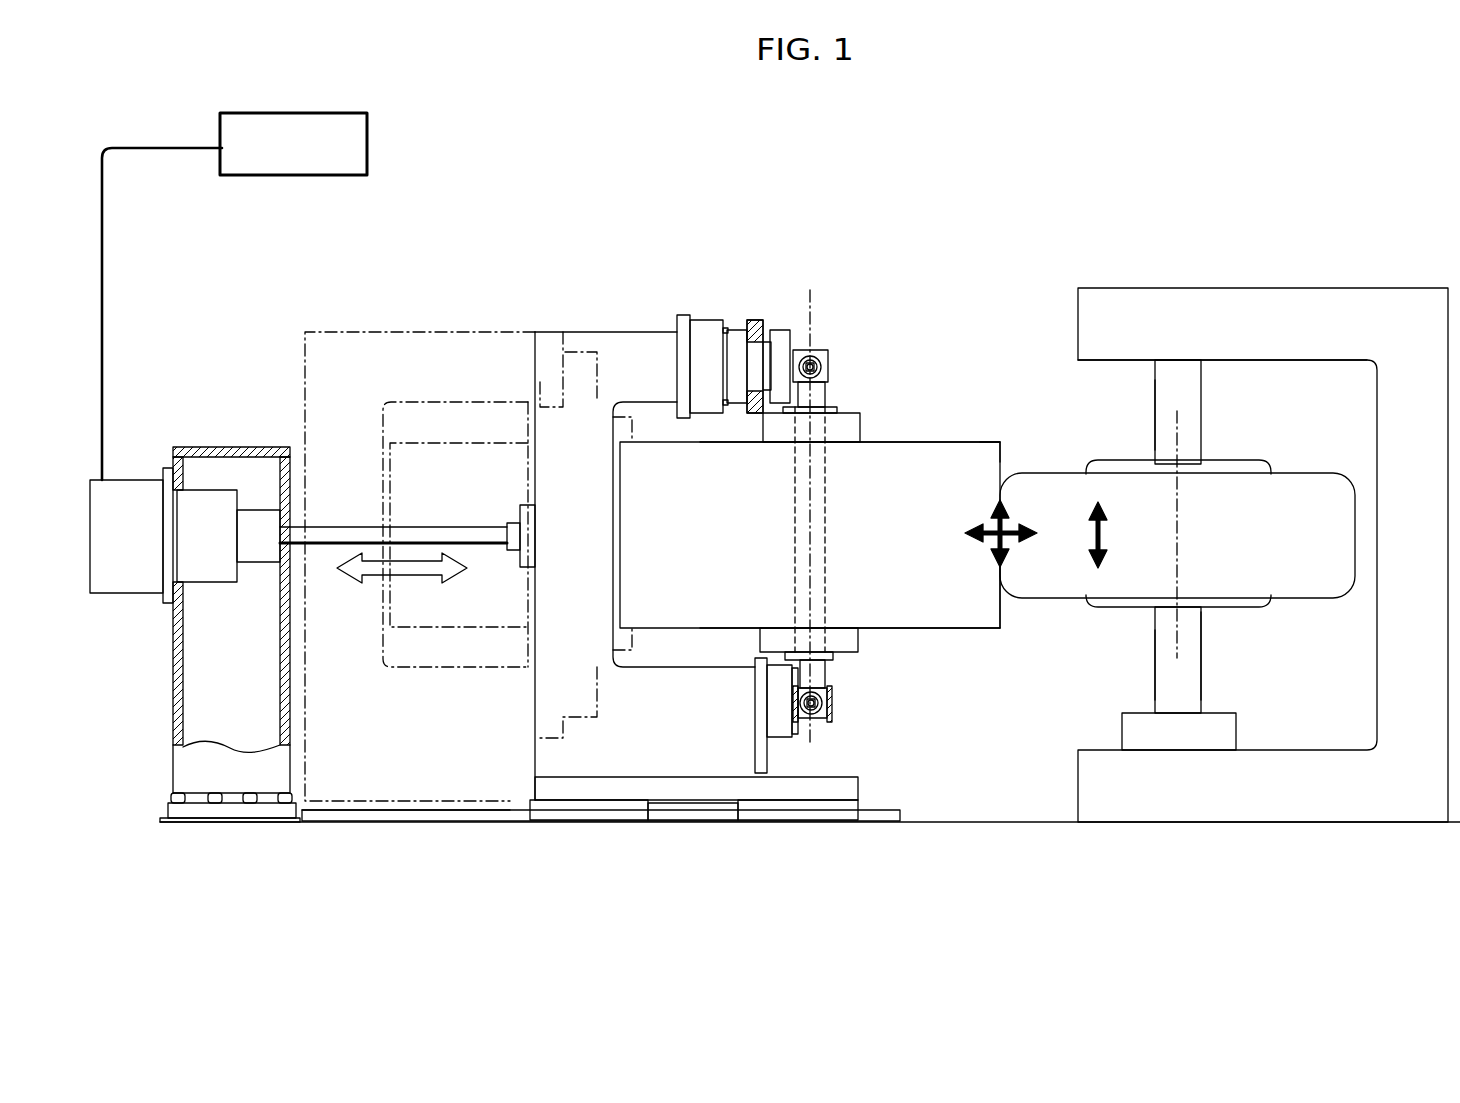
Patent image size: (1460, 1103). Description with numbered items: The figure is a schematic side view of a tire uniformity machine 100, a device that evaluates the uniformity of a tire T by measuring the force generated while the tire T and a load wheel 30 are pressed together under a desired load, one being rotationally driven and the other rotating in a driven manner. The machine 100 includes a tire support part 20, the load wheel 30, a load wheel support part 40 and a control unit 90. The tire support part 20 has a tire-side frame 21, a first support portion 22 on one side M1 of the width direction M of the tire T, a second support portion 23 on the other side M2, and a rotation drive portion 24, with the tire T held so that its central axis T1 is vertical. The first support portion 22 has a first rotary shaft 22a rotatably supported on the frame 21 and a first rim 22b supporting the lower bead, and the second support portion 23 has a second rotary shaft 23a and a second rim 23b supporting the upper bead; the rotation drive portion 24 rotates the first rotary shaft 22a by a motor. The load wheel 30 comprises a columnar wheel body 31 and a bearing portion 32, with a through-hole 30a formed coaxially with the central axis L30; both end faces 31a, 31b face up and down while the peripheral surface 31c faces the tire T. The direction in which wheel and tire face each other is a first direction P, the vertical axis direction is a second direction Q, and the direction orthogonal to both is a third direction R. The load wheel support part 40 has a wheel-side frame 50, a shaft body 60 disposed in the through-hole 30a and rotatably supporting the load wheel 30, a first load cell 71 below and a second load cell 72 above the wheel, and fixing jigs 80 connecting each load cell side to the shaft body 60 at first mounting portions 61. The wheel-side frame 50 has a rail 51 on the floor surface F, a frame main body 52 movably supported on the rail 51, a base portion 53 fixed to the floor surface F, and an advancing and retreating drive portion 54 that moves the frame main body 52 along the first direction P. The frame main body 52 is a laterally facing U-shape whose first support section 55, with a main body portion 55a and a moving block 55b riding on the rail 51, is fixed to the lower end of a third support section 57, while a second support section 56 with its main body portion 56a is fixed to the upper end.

The tire uniformity machine 100 is at (1240, 152).
The control unit 90 is at (380, 129).
The tire support part 20 is at (1312, 280).
The tire-side frame 21 is at (1122, 298).
The first support portion 22 is at (1195, 690).
The first rotary shaft 22a is at (1195, 645).
The first rim 22b is at (1240, 604).
The second support portion 23 is at (1198, 402).
The second rotary shaft 23a is at (1158, 412).
The second rim 23b is at (1130, 462).
The rotation drive portion 24 is at (1125, 728).
The tire T is at (1332, 485).
The central axis T1 is at (1202, 440).
The load wheel 30 is at (858, 470).
The through-hole 30a is at (865, 468).
The wheel body 31 is at (1000, 620).
The end face 31a is at (925, 632).
The end face 31b is at (1000, 446).
The peripheral surface 31c is at (1012, 600).
The bearing portion 32 is at (857, 416).
The shaft body 60 is at (822, 393).
The fixing jig 80 is at (818, 358).
The first mounting portion 61 is at (828, 330).
The central axis L30 is at (815, 285).
The second load cell 72 is at (735, 318).
The first load cell 71 is at (780, 735).
The load wheel support part 40 is at (667, 312).
The wheel-side frame 50 is at (410, 331).
The rail 51 is at (900, 815).
The frame main body 52 is at (643, 332).
The base portion 53 is at (198, 655).
The advancing and retreating drive portion 54 is at (358, 530).
The first support section 55 is at (710, 765).
The main body portion 55a is at (678, 770).
The moving block 55b is at (580, 815).
The second support section 56 is at (593, 332).
The main body portion 56a is at (618, 332).
The third support section 57 is at (550, 483).
The first direction P is at (1008, 528).
The second direction Q is at (1008, 545).
The third direction R is at (988, 540).
The width direction M is at (1100, 533).
The one side M1 is at (1097, 583).
The other side M2 is at (1097, 487).
The floor surface F is at (1020, 800).